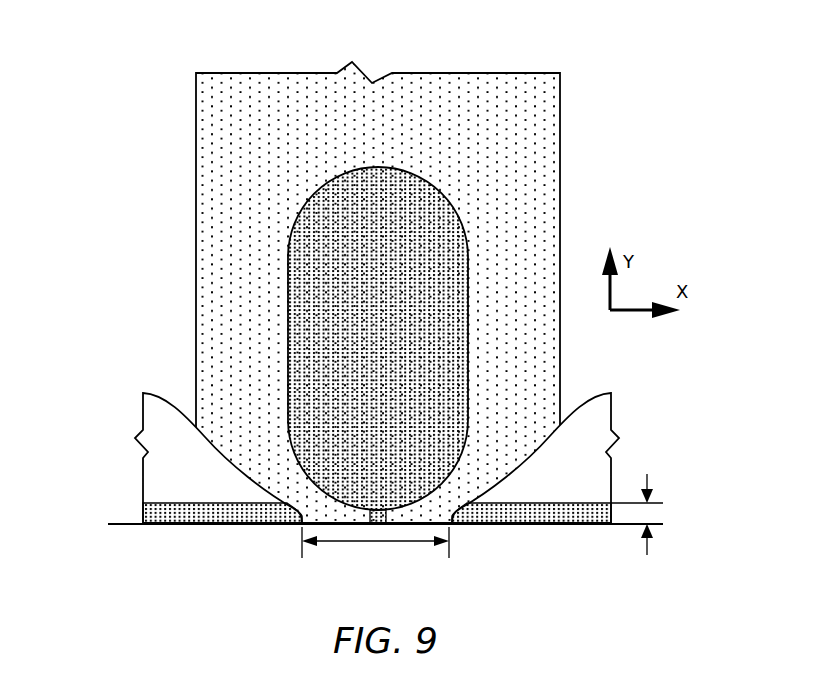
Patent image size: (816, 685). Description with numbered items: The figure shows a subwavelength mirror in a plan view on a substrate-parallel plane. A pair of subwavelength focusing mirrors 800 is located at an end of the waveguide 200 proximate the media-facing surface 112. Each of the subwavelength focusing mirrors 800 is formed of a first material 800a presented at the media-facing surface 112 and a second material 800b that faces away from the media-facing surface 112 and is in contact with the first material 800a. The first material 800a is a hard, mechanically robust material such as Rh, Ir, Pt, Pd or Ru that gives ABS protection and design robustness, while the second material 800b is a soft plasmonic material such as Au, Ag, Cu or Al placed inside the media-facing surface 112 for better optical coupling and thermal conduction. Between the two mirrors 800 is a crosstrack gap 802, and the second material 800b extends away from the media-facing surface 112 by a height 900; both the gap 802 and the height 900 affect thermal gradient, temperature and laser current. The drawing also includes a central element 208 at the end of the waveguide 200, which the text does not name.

The waveguide 200 is at (196, 148).
The conductive element 208 is at (220, 292).
The subwavelength focusing mirrors 800 is at (143, 453).
The first material 800a is at (143, 518).
The second material 800b is at (143, 416).
The crosstrack gap 802 is at (356, 543).
The height 900 is at (639, 530).
The media-facing surface 112 is at (122, 527).